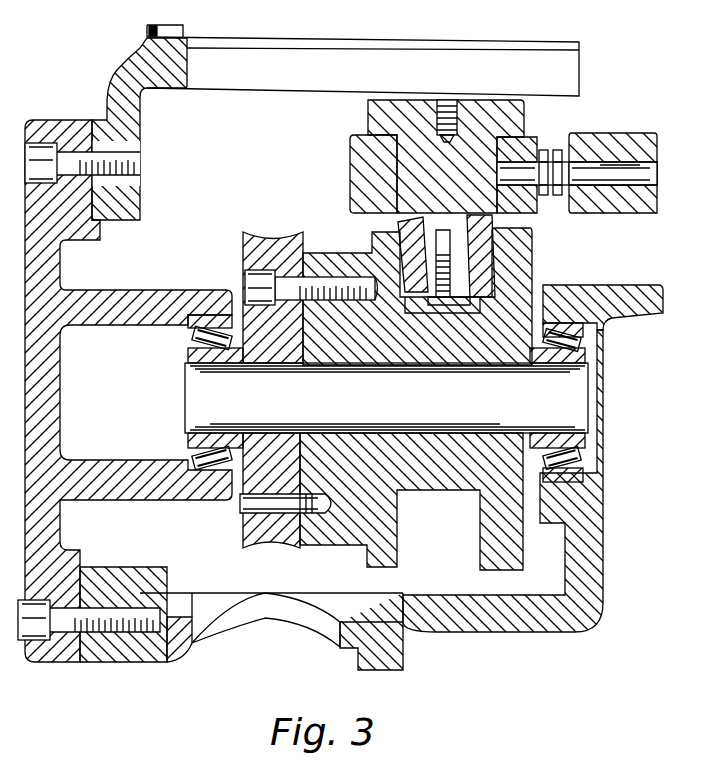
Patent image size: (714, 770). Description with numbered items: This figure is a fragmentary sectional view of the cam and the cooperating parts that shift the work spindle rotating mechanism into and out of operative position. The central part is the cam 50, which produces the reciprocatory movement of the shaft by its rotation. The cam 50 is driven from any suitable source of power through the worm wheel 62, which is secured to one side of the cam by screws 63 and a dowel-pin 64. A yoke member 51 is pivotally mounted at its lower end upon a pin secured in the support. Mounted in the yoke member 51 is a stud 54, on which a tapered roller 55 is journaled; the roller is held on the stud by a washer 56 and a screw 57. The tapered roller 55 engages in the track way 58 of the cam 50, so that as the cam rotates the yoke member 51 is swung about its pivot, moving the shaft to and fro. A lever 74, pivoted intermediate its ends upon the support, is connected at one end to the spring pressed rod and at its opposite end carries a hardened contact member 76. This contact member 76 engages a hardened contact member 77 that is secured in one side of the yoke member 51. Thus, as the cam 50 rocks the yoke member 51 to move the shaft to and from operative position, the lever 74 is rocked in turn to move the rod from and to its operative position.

The cam 50 is at (397, 518).
The yoke member 51 is at (358, 177).
The stud 54 is at (412, 150).
The tapered roller 55 is at (400, 238).
The washer 56 is at (483, 300).
The screw 57 is at (532, 280).
The track way 58 is at (460, 535).
The worm wheel 62 is at (240, 560).
The screws 63 is at (240, 285).
The dowel-pin 64 is at (240, 512).
The lever 74 is at (612, 143).
The hardened contact member 76 is at (560, 150).
The hardened contact member 77 is at (543, 150).